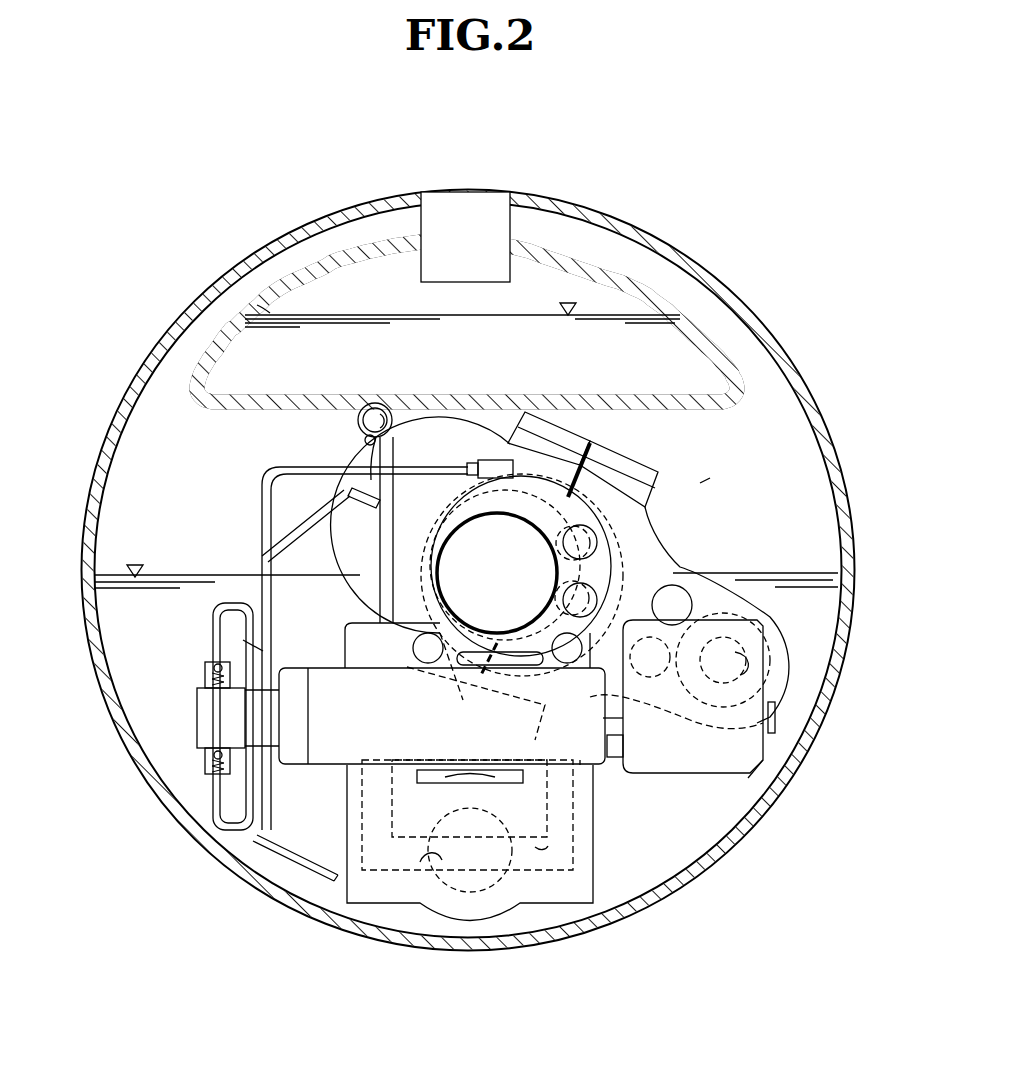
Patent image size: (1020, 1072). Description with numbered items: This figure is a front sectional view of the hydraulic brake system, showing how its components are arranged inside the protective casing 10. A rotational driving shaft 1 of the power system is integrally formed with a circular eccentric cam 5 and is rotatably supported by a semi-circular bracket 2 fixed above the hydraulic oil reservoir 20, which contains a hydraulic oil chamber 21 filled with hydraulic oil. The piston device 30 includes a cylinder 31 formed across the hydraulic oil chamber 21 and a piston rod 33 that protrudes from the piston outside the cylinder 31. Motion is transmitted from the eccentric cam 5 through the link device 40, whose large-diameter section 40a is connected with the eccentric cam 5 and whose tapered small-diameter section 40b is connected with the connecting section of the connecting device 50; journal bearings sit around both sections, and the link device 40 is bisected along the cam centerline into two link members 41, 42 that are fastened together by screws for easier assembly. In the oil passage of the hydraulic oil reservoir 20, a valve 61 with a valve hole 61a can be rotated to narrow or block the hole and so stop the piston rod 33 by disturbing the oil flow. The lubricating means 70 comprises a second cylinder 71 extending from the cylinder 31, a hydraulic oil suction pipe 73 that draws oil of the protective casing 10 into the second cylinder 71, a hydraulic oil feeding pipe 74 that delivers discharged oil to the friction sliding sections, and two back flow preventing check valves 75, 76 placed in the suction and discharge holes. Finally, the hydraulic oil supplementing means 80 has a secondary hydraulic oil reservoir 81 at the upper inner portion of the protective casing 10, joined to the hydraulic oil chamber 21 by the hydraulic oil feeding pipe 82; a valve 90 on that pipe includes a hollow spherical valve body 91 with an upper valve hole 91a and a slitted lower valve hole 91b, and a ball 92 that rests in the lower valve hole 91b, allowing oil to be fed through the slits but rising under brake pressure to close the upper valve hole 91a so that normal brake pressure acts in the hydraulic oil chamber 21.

The protective casing 10 is at (279, 245).
The hydraulic oil supplementing means 80 is at (624, 265).
The secondary hydraulic oil reservoir 81 is at (258, 310).
The upper valve hole 91a is at (377, 403).
The valve 90 is at (206, 385).
The valve body 91 is at (358, 410).
The ball 92 is at (357, 423).
The lower valve hole 91b is at (365, 442).
The hydraulic oil feeding pipe 82 is at (372, 453).
The semi-circular bracket 2 is at (413, 538).
The rotational driving shaft 1 is at (455, 583).
The link device 40 is at (695, 403).
The link member 41 is at (577, 437).
The link member 42 is at (617, 480).
The large-diameter section 40a is at (700, 483).
The small-diameter section 40b is at (745, 658).
The eccentric cam 5 is at (682, 565).
The connecting device 50 is at (748, 780).
The piston device 30 is at (318, 775).
The cylinder 31 is at (582, 760).
The piston rod 33 is at (605, 720).
The hydraulic oil reservoir 20 is at (350, 908).
The hydraulic oil chamber 21 is at (540, 855).
The valve 61 is at (470, 882).
The valve hole 61a is at (427, 855).
The lubricating means 70 is at (190, 765).
The second cylinder 71 is at (203, 733).
The hydraulic oil suction pipe 73 is at (217, 707).
The hydraulic oil feeding pipe 74 is at (243, 640).
The back flow preventing check valve 75 is at (210, 673).
The back flow preventing check valve 76 is at (222, 790).